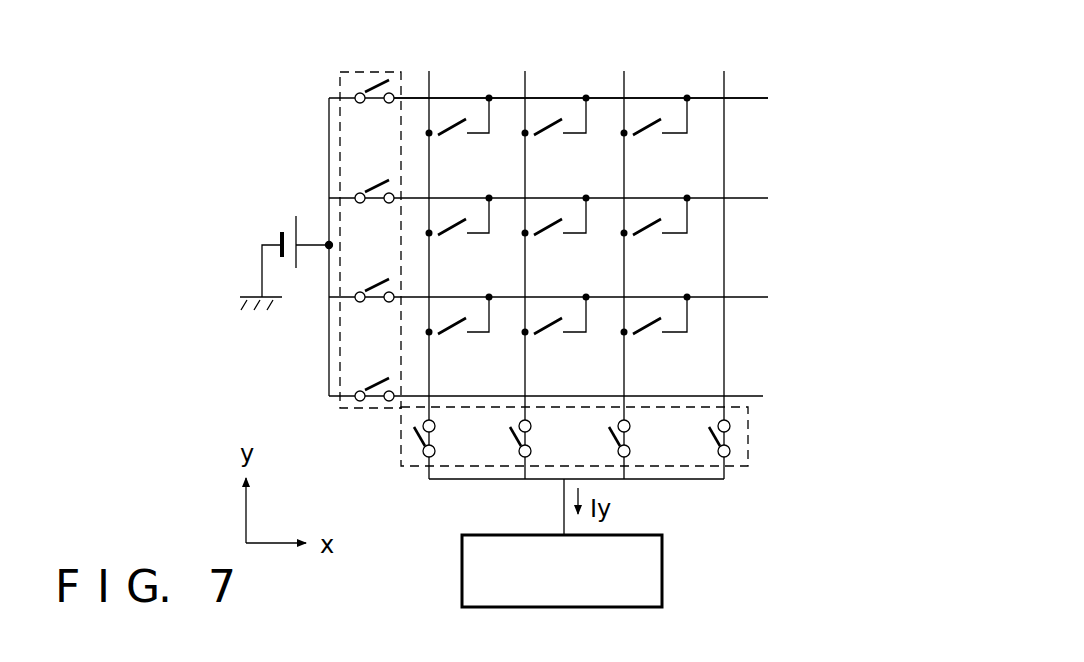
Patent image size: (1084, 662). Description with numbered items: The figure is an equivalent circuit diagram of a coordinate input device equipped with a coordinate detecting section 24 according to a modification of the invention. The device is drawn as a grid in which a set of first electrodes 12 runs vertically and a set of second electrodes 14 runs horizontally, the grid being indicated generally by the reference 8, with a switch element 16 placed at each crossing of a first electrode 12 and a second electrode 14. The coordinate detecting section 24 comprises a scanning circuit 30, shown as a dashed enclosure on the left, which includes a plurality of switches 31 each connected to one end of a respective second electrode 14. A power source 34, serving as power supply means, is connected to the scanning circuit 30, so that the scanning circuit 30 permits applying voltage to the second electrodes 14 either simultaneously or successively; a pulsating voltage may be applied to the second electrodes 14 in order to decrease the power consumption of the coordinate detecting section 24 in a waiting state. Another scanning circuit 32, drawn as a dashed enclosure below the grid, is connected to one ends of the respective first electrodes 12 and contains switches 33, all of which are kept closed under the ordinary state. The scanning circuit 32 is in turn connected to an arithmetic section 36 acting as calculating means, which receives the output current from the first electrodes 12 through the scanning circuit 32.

The sensor matrix 8 is at (565, 84).
The first electrode 12 is at (725, 348).
The second electrode 14 is at (745, 94).
The pressure-sensitive switch 16 is at (648, 112).
The coordinate detecting section 24 is at (298, 128).
The scanning circuit 30 is at (361, 76).
The switch 31 is at (365, 182).
The scanning circuit 32 is at (750, 452).
The switch 33 is at (732, 433).
The power source 34 is at (275, 235).
The arithmetic section 36 is at (663, 580).